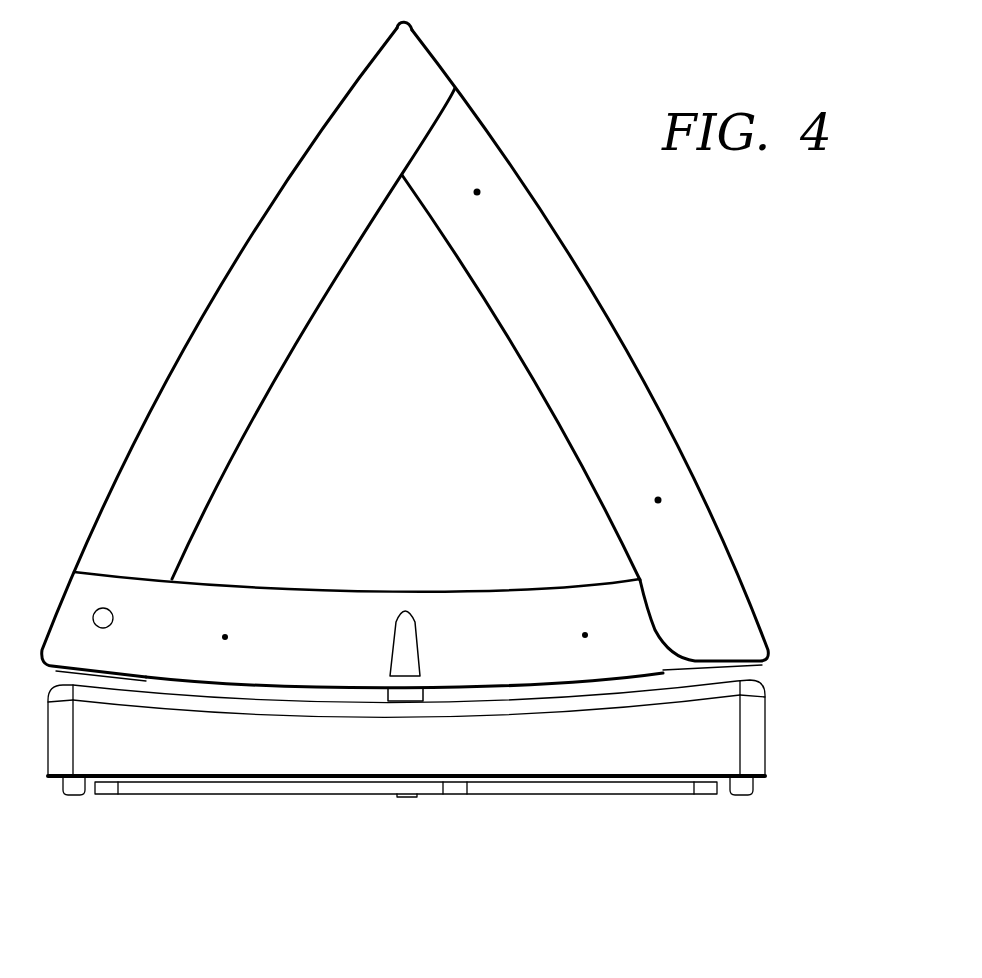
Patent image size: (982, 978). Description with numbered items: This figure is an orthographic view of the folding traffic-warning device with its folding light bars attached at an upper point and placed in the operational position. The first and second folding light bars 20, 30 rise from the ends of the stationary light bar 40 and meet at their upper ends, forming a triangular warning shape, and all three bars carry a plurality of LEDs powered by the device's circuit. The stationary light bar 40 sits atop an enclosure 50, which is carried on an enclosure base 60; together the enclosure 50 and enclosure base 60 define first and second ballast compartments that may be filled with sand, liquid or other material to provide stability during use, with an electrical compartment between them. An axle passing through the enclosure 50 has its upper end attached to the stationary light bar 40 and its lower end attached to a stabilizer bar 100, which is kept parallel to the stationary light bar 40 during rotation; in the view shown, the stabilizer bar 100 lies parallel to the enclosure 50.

The first folding light bar 20 is at (637, 328).
The second folding light bar 30 is at (208, 277).
The stationary light bar 40 is at (439, 575).
The enclosure 50 is at (773, 729).
The enclosure base 60 is at (723, 780).
The stabilizer bar 100 is at (337, 803).